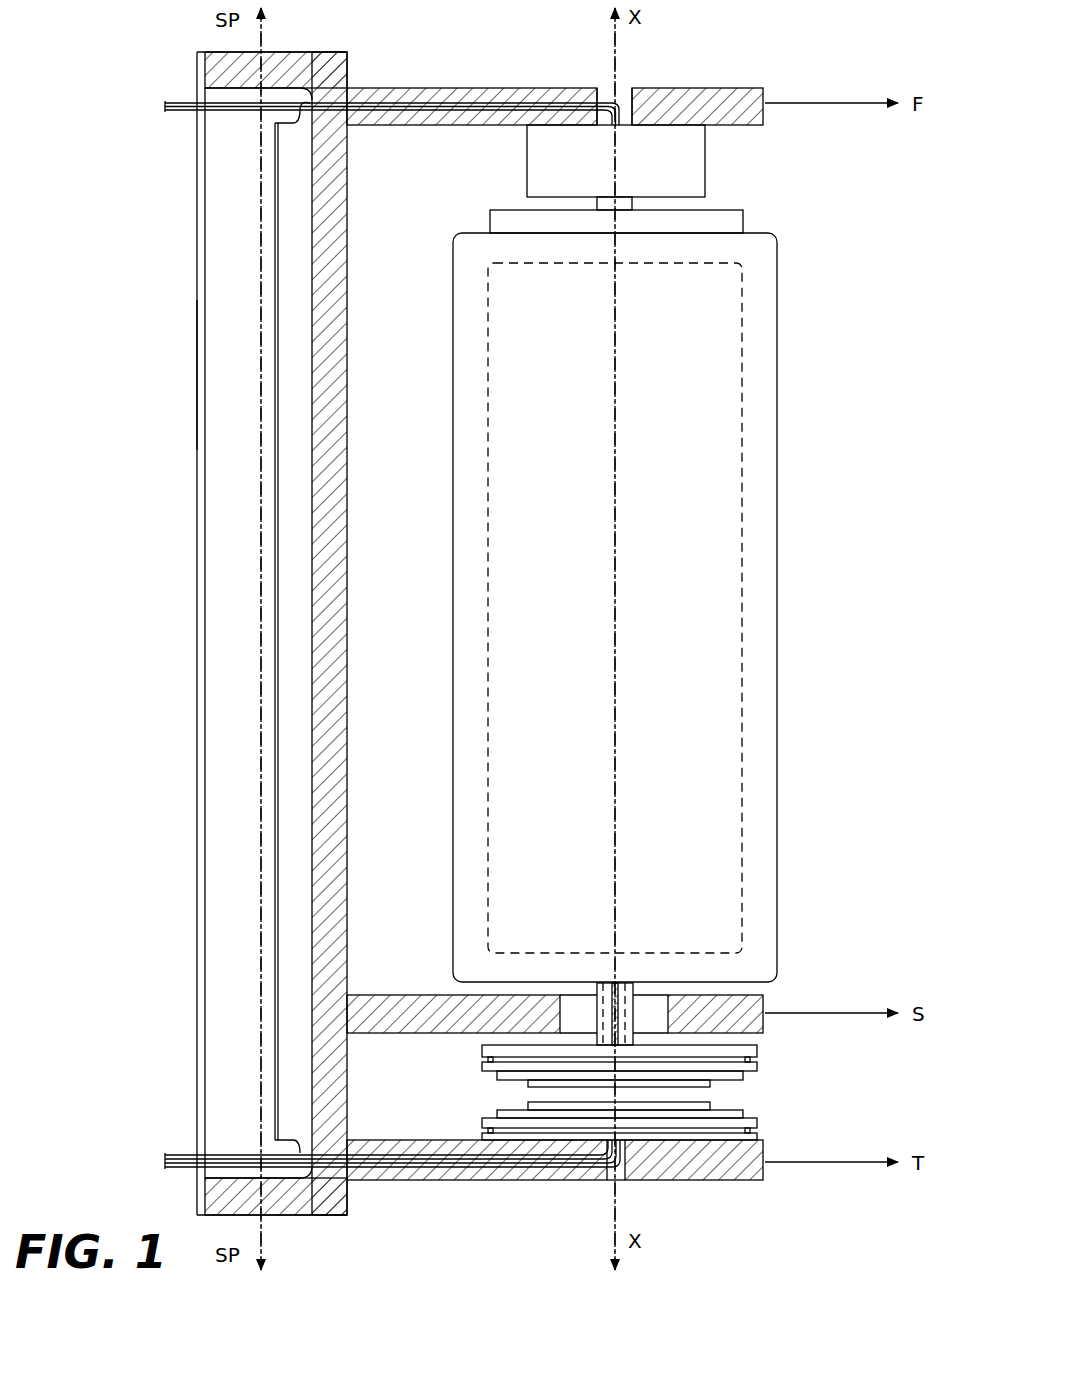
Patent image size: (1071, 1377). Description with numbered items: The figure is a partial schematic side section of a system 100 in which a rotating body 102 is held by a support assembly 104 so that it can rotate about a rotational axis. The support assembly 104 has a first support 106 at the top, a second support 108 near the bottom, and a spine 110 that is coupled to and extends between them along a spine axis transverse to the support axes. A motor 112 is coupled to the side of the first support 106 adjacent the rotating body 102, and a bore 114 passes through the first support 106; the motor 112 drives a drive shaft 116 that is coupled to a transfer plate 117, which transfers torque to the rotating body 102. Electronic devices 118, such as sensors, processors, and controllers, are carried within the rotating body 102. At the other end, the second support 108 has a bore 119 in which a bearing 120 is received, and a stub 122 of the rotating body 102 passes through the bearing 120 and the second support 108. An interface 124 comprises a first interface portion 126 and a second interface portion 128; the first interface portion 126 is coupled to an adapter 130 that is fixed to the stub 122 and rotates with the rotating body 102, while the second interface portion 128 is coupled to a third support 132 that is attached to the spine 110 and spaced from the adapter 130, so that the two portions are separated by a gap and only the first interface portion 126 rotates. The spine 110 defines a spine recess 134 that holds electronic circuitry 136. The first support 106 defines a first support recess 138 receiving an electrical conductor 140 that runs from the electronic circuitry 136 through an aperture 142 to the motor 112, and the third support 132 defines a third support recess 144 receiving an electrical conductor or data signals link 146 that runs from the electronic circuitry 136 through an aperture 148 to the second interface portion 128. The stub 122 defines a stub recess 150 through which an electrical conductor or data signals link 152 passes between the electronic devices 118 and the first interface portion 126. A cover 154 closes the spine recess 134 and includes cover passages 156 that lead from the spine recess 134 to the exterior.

The system 100 is at (808, 62).
The rotating body 102 is at (765, 325).
The support assembly 104 is at (226, 620).
The first support 106 is at (743, 88).
The second support 108 is at (765, 1005).
The spine 110 is at (320, 52).
The motor 112 is at (705, 160).
The bore 114 is at (628, 93).
The drive shaft 116 is at (633, 205).
The transfer plate 117 is at (743, 222).
The electronic devices 118 is at (745, 408).
The bore 119 is at (650, 1000).
The bearing 120 is at (645, 1003).
The stub 122 is at (660, 1000).
The interface 124 is at (632, 1090).
The first interface portion 126 is at (770, 1068).
The second interface portion 128 is at (773, 1117).
The adapter 130 is at (757, 1052).
The third support 132 is at (765, 1172).
The spine recess 134 is at (215, 238).
The electronic circuitry 136 is at (290, 325).
The first support recess 138 is at (465, 100).
The electrical conductor 140 is at (528, 100).
The aperture 142 is at (347, 88).
The third support recess 144 is at (507, 1168).
The electrical conductor or data signals link 146 is at (452, 1160).
The aperture 148 is at (350, 1180).
The stub recess 150 is at (605, 1010).
The electrical conductor or data signals link 152 is at (640, 953).
The cover 154 is at (197, 375).
The cover passage 156 is at (165, 103).